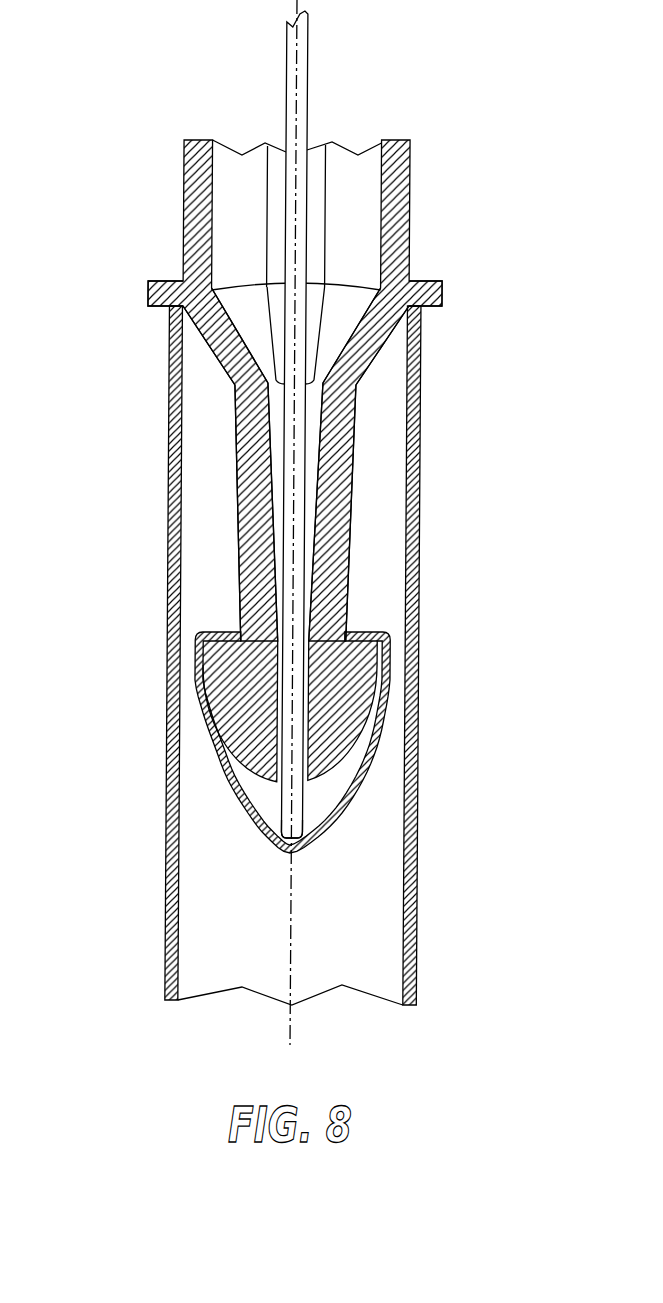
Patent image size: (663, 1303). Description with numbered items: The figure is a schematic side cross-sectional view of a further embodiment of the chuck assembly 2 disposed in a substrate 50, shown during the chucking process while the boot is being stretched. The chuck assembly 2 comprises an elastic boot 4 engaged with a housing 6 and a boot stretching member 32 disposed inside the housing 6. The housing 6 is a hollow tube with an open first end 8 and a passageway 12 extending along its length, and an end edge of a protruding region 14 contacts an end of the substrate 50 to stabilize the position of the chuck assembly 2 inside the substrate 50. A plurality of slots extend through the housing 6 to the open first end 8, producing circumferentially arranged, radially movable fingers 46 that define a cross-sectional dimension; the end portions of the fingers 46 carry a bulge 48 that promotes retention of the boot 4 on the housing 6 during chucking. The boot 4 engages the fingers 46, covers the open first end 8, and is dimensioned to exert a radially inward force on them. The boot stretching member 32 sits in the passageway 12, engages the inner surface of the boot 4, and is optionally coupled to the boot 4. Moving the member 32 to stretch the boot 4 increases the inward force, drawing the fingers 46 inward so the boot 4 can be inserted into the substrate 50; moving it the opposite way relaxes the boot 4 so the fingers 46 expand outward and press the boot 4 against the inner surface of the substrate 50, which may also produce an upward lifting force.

The chuck assembly 2 is at (370, 394).
The boot 4 is at (360, 802).
The housing 6 is at (212, 355).
The open first end 8 is at (304, 792).
The passageway 12 is at (315, 230).
The protruding region 14 is at (148, 295).
The boot stretching member 32 is at (289, 90).
The fingers 46 is at (238, 548).
The bulge 48 is at (213, 683).
The substrate 50 is at (419, 505).